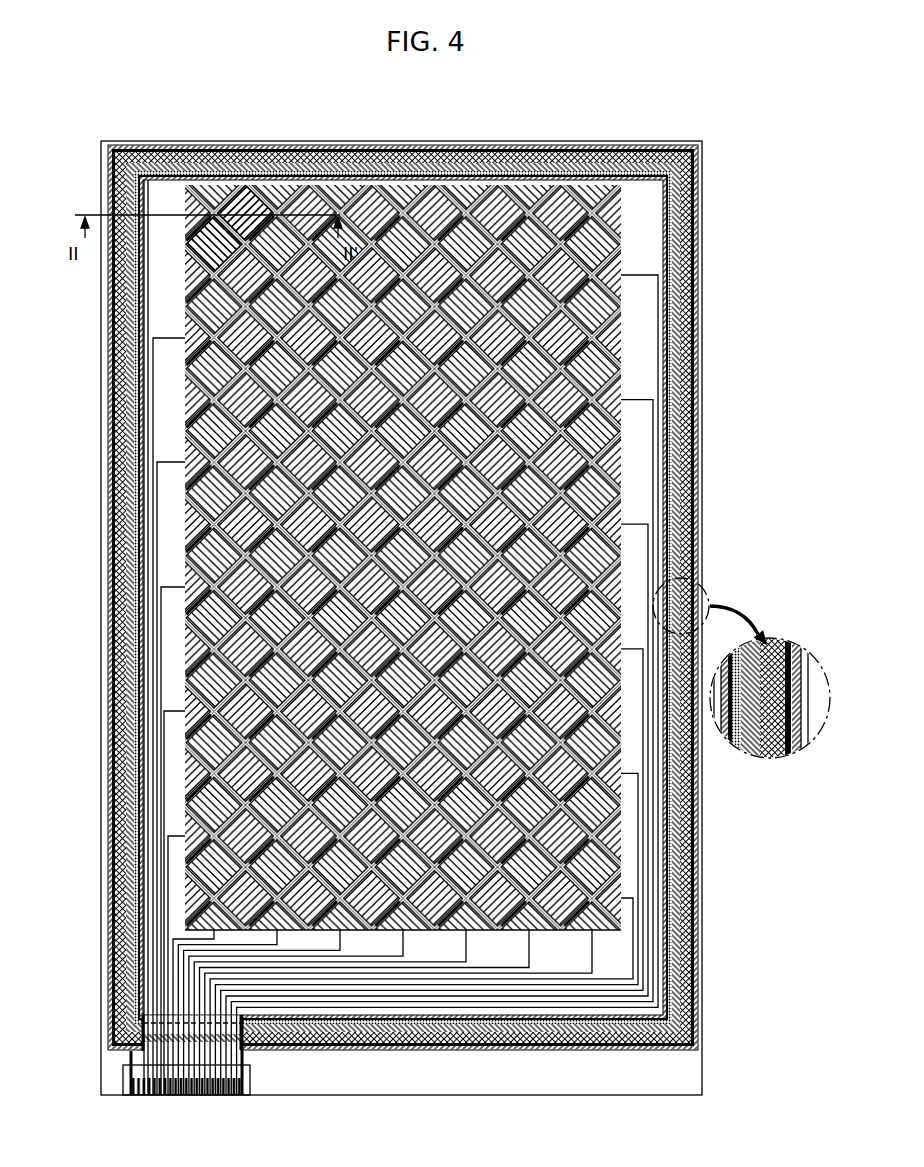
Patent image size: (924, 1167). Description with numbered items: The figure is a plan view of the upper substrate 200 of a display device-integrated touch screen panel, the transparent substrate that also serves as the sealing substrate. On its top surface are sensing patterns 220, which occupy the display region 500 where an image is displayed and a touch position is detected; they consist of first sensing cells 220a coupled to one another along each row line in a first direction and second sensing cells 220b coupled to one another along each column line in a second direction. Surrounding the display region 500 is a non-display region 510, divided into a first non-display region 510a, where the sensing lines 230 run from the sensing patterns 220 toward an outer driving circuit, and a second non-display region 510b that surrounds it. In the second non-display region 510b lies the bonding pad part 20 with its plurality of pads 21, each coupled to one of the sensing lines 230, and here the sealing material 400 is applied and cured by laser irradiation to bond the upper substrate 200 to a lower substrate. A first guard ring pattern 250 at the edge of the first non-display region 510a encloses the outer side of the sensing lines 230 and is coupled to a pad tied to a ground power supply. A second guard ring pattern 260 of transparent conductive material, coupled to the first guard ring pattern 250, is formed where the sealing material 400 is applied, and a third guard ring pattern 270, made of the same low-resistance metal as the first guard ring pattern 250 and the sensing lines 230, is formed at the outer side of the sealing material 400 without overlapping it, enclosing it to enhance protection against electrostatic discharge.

The bonding pad part 20 is at (243, 1082).
The pads 21 is at (115, 1070).
The upper substrate 200 is at (512, 133).
The sensing patterns 220 is at (290, 96).
The first sensing cells 220a is at (240, 200).
The second sensing cells 220b is at (206, 224).
The sensing lines 230 is at (125, 292).
The first guard ring pattern 250 is at (132, 661).
The second guard ring pattern 260 is at (102, 592).
The third guard ring pattern 270 is at (118, 734).
The sealing material 400 is at (108, 466).
The display region 500 is at (628, 342).
The non-display region 510 is at (775, 172).
The first non-display region 510a is at (641, 210).
The second non-display region 510b is at (680, 229).